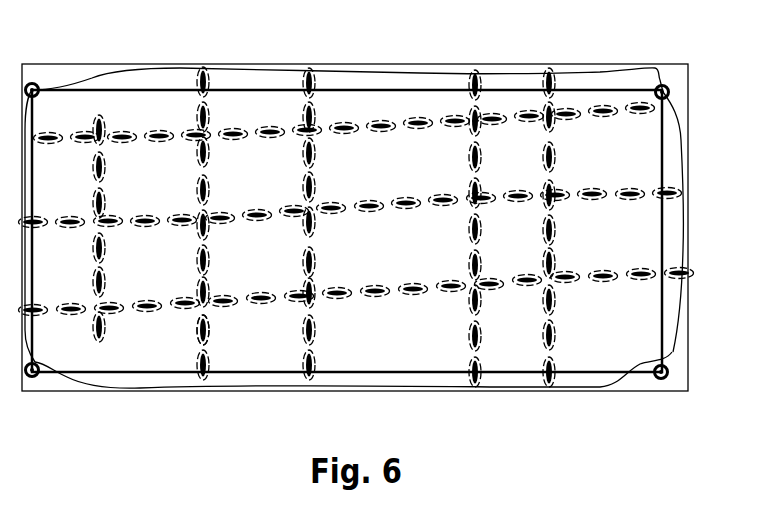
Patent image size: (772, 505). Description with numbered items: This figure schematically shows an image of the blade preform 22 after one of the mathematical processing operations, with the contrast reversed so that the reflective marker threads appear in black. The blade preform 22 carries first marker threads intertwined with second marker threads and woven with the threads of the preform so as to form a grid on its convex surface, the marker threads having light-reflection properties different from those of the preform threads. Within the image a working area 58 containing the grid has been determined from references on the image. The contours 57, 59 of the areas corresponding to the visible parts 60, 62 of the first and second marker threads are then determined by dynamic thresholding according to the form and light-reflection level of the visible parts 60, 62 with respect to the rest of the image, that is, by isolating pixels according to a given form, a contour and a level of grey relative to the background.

The blade preform 22 is at (679, 140).
The working area 58 is at (428, 90).
The contour 57 is at (370, 295).
The visible part 60 is at (412, 293).
The contour 59 is at (203, 329).
The visible part 62 is at (203, 329).